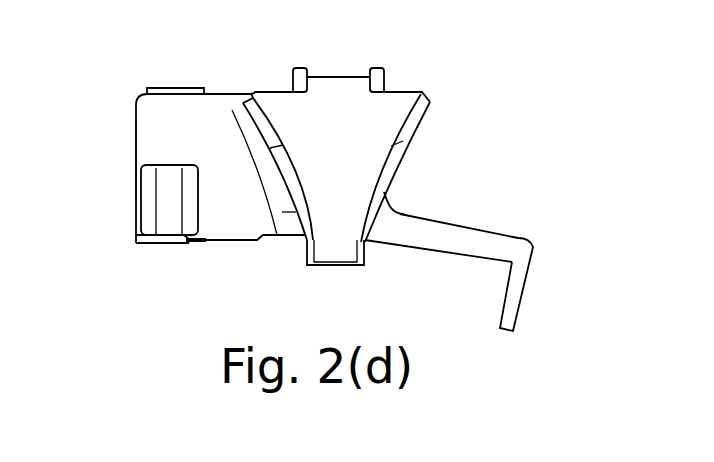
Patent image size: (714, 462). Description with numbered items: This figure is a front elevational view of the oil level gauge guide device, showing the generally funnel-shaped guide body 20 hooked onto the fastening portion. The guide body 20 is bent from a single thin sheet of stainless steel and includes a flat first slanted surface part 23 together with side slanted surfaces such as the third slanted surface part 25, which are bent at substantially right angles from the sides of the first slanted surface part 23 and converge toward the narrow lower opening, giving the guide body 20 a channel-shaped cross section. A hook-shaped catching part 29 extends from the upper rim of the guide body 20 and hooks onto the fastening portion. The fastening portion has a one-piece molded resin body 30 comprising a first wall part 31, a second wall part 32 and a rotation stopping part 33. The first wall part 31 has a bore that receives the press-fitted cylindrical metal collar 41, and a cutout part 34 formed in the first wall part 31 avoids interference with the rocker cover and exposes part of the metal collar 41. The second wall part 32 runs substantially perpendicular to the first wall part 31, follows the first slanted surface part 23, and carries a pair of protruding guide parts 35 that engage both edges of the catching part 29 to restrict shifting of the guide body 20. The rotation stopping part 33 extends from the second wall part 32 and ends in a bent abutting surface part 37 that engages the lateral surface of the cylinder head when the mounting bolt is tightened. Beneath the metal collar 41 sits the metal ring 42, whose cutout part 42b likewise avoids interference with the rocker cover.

The guide body 20 is at (424, 80).
The first slanted surface part 23 is at (356, 126).
The third slanted surface part 25 is at (423, 108).
The catching part 29 is at (342, 75).
The resin body 30 is at (126, 110).
The first wall part 31 is at (150, 145).
The second wall part 32 is at (394, 206).
The rotation stopping part 33 is at (455, 243).
The cutout part 34 is at (145, 213).
The protruding guide parts 35 is at (297, 67).
The abutting surface part 37 is at (518, 299).
The metal collar 41 is at (181, 88).
The metal ring 42 is at (213, 246).
The cutout part 42b is at (167, 246).